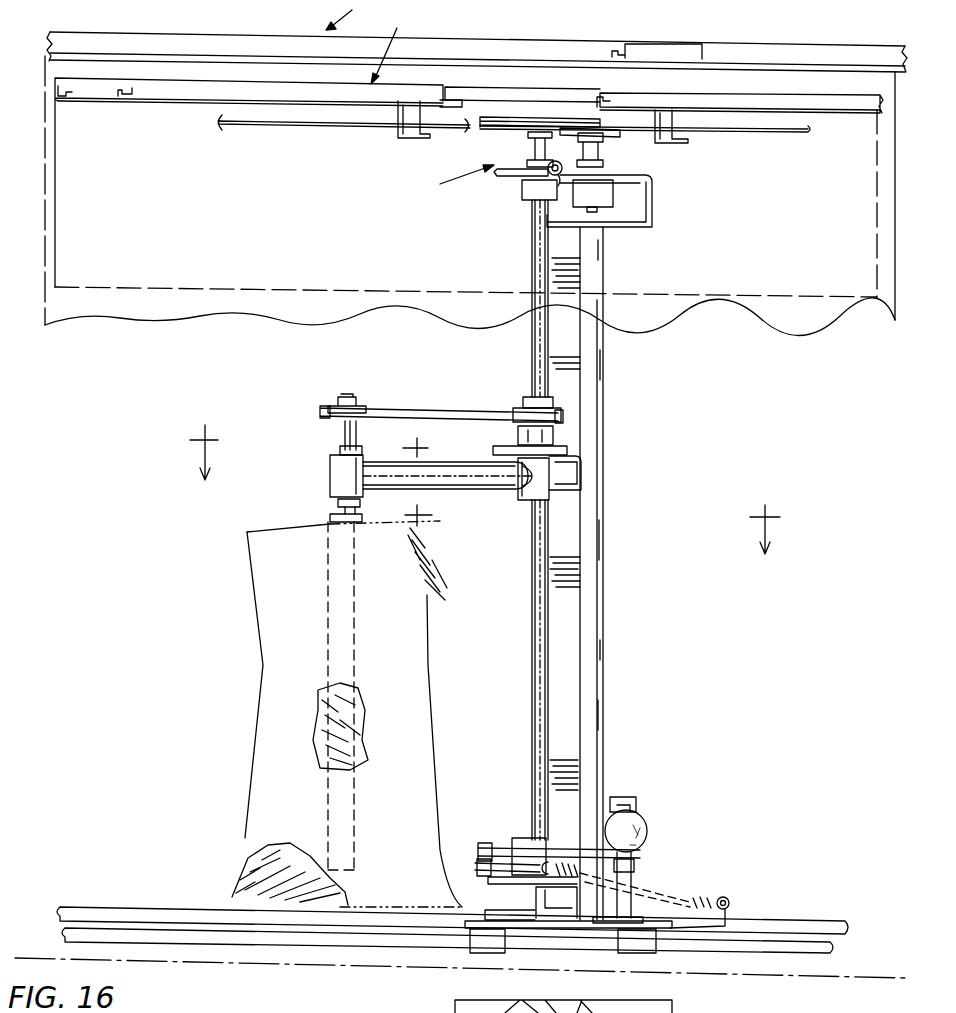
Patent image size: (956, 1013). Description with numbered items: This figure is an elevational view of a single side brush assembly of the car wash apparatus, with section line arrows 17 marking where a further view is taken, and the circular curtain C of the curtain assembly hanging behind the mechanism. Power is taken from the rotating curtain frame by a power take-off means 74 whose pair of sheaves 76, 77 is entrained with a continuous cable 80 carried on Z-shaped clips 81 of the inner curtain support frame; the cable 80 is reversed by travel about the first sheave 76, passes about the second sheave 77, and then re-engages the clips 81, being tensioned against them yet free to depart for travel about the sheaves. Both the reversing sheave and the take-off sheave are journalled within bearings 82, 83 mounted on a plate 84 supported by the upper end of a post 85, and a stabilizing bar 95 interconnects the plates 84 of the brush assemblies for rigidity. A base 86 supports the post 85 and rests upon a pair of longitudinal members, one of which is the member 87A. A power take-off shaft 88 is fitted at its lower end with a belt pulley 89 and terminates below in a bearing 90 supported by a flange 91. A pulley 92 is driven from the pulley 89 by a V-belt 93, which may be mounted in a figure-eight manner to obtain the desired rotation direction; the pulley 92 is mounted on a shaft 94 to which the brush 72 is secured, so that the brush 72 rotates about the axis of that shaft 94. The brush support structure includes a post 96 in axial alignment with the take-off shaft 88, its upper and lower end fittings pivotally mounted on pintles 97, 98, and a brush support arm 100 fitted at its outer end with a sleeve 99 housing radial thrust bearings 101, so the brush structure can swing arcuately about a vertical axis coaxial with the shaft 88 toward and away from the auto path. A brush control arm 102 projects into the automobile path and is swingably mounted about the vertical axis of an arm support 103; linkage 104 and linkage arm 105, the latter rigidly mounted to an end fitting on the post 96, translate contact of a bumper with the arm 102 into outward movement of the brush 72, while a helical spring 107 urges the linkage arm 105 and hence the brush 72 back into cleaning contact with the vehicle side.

The brush 72 is at (255, 618).
The power take-off means 74 is at (508, 166).
The first sheave 76 is at (560, 137).
The second sheave 77 is at (487, 128).
The continuous element 80 is at (325, 128).
The Z-shaped clip 81 is at (410, 140).
The bearing 82 is at (530, 190).
The bearing 83 is at (606, 198).
The plate 84 is at (497, 172).
The post 85 is at (600, 510).
The base 86 is at (549, 925).
The longitudinal member 87A is at (764, 946).
The power take-off shaft 88 is at (538, 302).
The belt pulley 89 is at (522, 400).
The bearing 90 is at (515, 437).
The flange 91 is at (580, 470).
The pulley 92 is at (360, 408).
The V-belt 93 is at (433, 410).
The shaft 94 is at (343, 430).
The stabilizing bar 95 is at (560, 183).
The post 96 is at (528, 628).
The pintle 97 is at (520, 500).
The pintle 98 is at (520, 826).
The sleeve 99 is at (330, 470).
The brush support arm 100 is at (445, 480).
The radial thrust bearing 101 is at (340, 447).
The brush control arm 102 is at (647, 826).
The arm support 103 is at (632, 878).
The linkage 104 is at (550, 846).
The linkage arm 105 is at (505, 872).
The helical spring 107 is at (665, 888).
The plate 17 is at (485, 489).
The curtain C is at (148, 292).